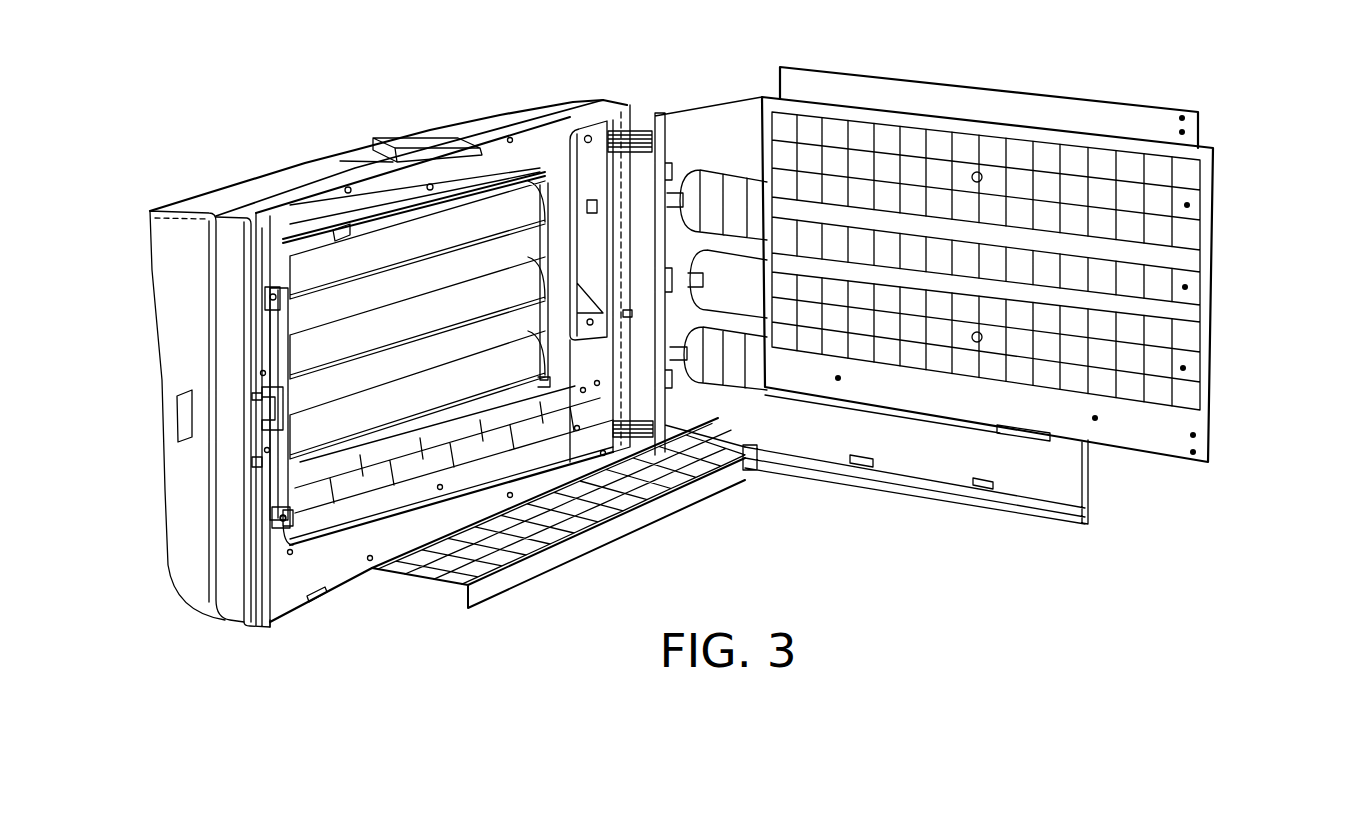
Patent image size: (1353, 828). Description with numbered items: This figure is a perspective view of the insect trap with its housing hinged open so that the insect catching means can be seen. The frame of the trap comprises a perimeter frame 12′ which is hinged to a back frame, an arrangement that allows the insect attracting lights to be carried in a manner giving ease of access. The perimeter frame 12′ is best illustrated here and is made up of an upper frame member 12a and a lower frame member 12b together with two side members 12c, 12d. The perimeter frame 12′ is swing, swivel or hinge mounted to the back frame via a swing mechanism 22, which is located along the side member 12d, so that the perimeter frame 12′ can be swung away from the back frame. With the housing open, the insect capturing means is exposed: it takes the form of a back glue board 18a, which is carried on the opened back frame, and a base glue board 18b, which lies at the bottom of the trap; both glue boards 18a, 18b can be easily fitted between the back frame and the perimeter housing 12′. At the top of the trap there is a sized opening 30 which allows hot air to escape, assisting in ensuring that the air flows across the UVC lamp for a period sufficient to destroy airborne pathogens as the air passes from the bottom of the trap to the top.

The perimeter frame 12′ is at (240, 606).
The upper frame member 12a is at (522, 125).
The lower frame member 12b is at (349, 582).
The side member 12c is at (230, 486).
The side member 12d is at (580, 150).
The back glue board 18a is at (1190, 259).
The base glue board 18b is at (690, 468).
The swing mechanism 22 is at (637, 443).
The sized opening 30 is at (426, 157).